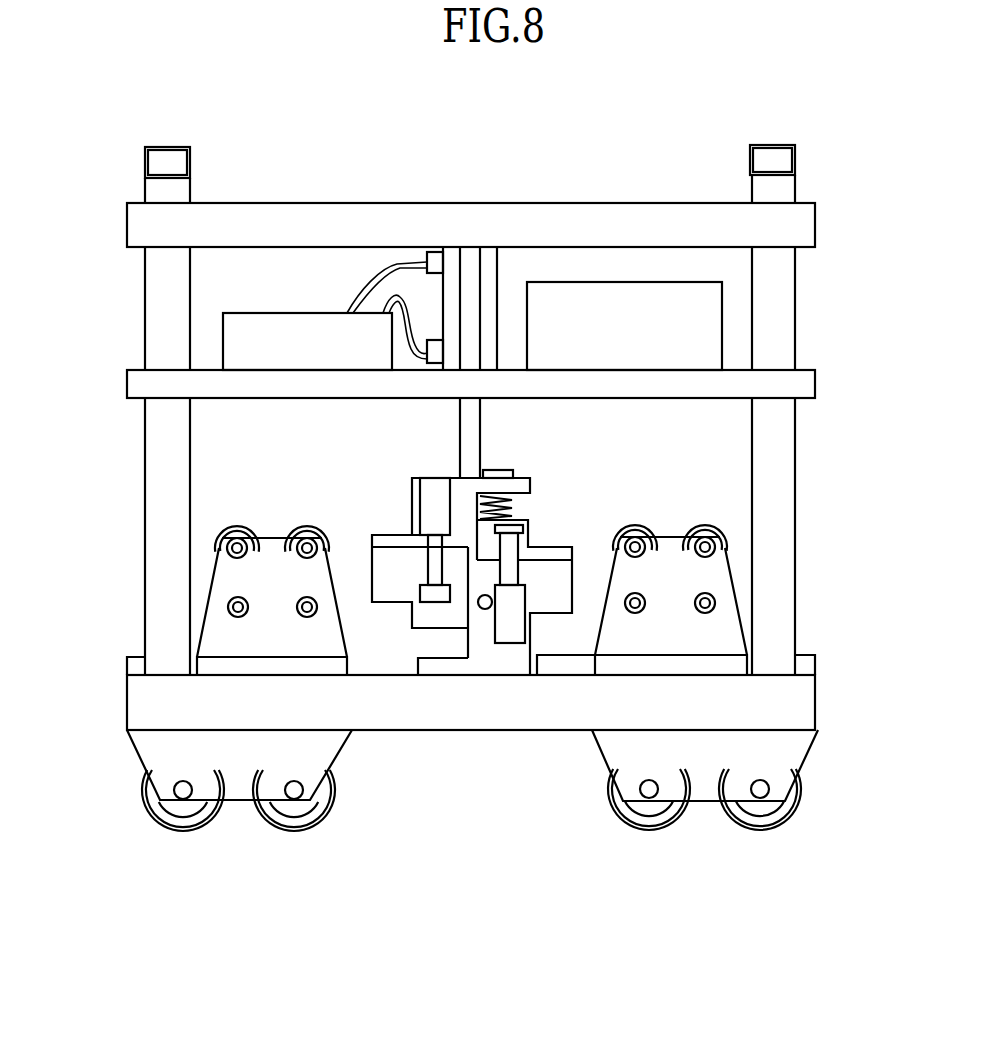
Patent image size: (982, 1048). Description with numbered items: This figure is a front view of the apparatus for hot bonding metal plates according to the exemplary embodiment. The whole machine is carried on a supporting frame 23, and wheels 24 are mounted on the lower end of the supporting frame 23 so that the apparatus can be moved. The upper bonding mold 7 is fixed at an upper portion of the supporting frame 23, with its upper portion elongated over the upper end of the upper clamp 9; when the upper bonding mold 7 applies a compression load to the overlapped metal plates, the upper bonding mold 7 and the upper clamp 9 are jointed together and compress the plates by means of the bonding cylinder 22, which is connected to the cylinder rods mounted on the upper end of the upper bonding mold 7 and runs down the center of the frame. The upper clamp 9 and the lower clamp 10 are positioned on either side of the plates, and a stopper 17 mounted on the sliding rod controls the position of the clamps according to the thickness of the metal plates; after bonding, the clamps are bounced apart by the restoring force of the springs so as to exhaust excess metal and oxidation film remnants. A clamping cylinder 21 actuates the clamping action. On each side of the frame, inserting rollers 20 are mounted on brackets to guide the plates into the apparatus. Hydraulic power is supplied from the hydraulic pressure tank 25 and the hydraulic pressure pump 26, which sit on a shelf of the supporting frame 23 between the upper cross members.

The upper bonding mold 7 is at (393, 535).
The upper clamp 9 is at (552, 547).
The lower clamp 10 is at (385, 587).
The stopper 17 is at (507, 468).
The inserting roller 20 is at (302, 525).
The clamping cylinder 21 is at (433, 493).
The bonding cylinder 22 is at (468, 262).
The supporting frame 23 is at (158, 530).
The wheel 24 is at (317, 823).
The hydraulic pressure tank 25 is at (572, 282).
The hydraulic pressure pump 26 is at (298, 313).